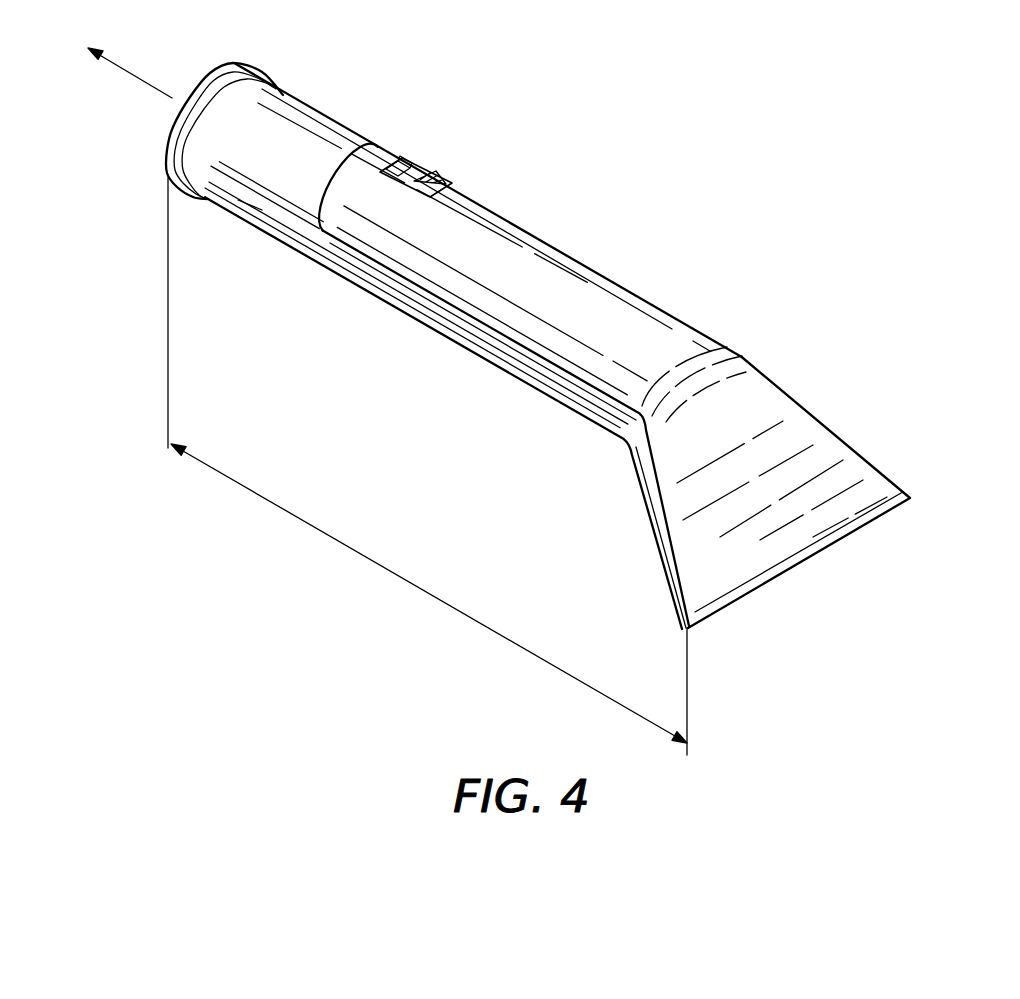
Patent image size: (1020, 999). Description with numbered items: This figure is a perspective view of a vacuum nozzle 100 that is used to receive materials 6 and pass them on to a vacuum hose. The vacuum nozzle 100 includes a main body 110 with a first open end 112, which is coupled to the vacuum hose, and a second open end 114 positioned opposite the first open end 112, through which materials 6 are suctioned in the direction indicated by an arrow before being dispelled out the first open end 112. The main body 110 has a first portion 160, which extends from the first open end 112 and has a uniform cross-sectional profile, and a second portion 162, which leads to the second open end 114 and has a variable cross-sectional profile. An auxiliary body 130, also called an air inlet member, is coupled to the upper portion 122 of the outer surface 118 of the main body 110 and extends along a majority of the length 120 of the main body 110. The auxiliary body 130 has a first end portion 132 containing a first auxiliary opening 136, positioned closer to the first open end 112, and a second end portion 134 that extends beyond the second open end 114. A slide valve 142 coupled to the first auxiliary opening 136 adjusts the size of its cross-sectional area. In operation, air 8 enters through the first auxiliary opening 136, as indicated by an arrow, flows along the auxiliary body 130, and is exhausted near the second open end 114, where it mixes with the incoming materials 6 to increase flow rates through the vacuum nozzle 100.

The vacuum nozzle 100 is at (782, 167).
The main body 110 is at (405, 319).
The first open end 112 is at (170, 128).
The second open end 114 is at (678, 630).
The outer surface 118 is at (277, 210).
The length 120 is at (368, 557).
The upper portion 122 is at (283, 94).
The auxiliary body 130 is at (763, 351).
The first end portion 132 is at (380, 150).
The second end portion 134 is at (797, 532).
The first auxiliary opening 136 is at (441, 186).
The valve 142 is at (392, 166).
The air 8 is at (421, 163).
The first portion 160 is at (333, 268).
The second portion 162 is at (653, 552).
The materials 6 is at (738, 618).